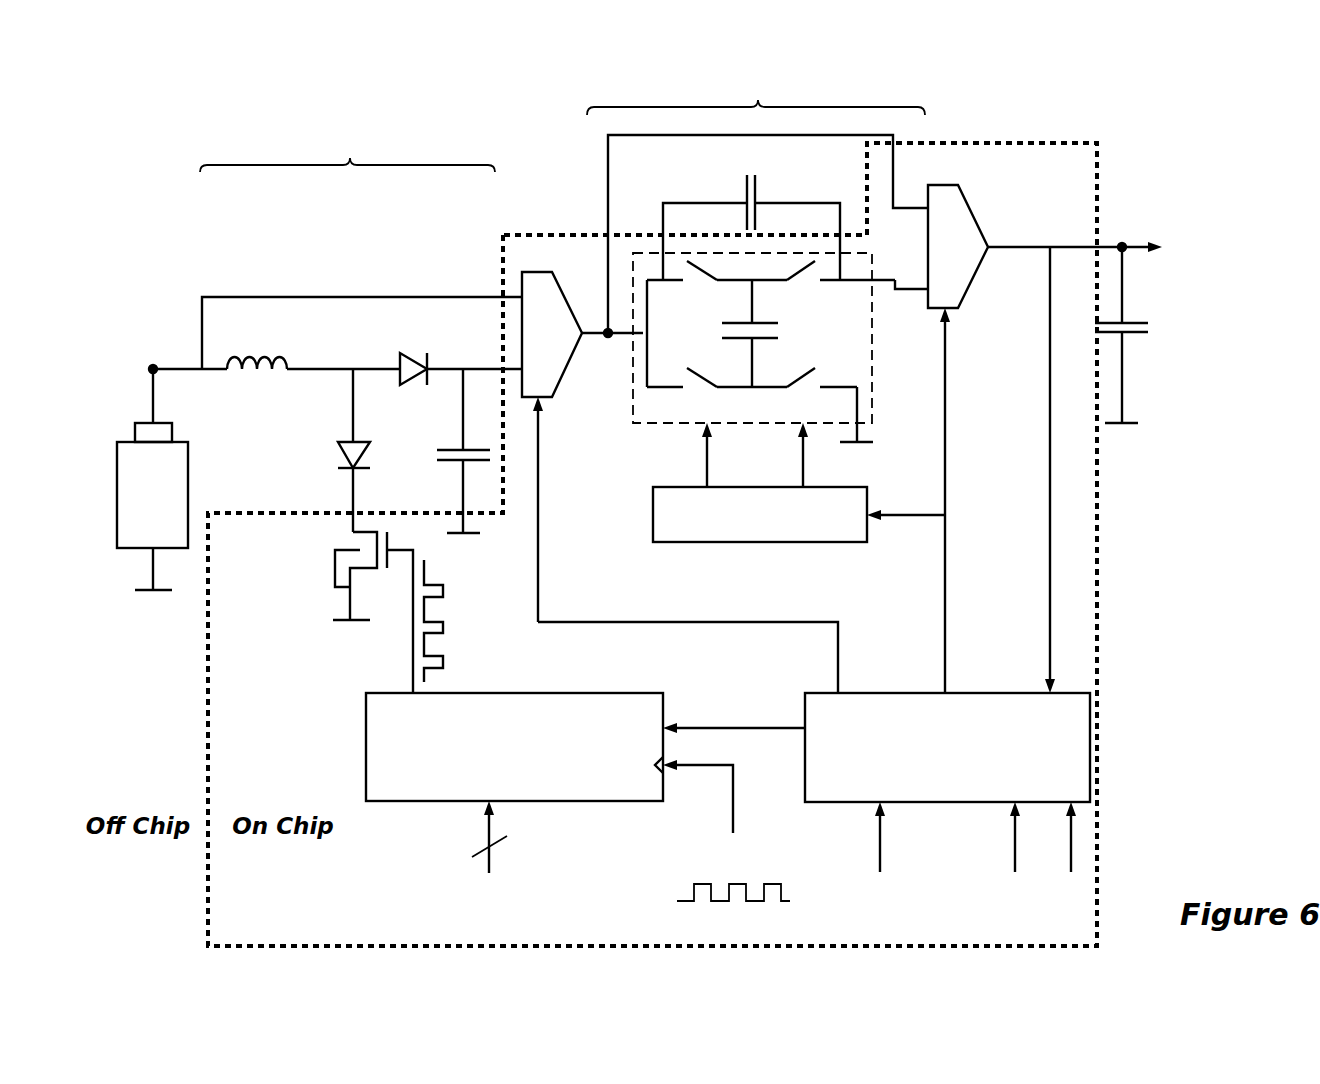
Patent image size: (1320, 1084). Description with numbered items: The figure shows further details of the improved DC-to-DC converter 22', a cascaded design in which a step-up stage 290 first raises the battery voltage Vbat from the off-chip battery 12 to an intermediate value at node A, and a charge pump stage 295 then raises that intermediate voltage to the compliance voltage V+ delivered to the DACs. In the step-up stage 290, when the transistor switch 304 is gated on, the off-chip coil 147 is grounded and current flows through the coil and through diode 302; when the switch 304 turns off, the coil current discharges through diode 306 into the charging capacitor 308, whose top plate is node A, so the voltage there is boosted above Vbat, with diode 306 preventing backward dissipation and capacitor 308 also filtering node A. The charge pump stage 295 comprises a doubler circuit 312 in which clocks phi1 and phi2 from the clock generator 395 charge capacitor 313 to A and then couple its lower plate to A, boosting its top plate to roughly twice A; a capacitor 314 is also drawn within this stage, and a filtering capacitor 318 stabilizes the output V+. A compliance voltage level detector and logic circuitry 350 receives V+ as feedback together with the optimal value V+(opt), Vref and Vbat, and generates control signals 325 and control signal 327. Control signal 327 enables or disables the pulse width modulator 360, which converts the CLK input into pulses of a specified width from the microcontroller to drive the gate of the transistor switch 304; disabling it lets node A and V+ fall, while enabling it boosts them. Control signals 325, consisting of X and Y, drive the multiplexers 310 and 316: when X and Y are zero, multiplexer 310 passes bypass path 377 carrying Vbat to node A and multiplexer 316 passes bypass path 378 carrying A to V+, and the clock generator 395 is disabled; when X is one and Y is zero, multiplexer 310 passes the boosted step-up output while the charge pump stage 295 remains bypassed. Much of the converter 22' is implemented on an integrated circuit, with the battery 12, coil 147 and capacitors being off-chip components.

The improved DC-to-DC converter 22' is at (755, 500).
The battery 12 is at (134, 471).
The coil 147 is at (276, 385).
The step-up stage 290 is at (347, 137).
The charge pump stage 295 is at (756, 81).
The diode 302 is at (337, 460).
The transistor switch 304 is at (328, 545).
The diode 306 is at (410, 352).
The charging capacitor 308 is at (458, 463).
The multiplexer 310 is at (523, 268).
The doubler circuit 312 is at (687, 425).
The capacitor 313 is at (758, 338).
The capacitor 314 is at (745, 192).
The multiplexer 316 is at (965, 186).
The filtering capacitor 318 is at (1133, 323).
The control signals 325 is at (947, 643).
The control signal 327 is at (693, 725).
The compliance voltage level detector and logic circuitry 350 is at (949, 814).
The pulse width modulator 360 is at (578, 815).
The path 377 is at (350, 296).
The path 378 is at (608, 210).
The clock generator 395 is at (690, 543).